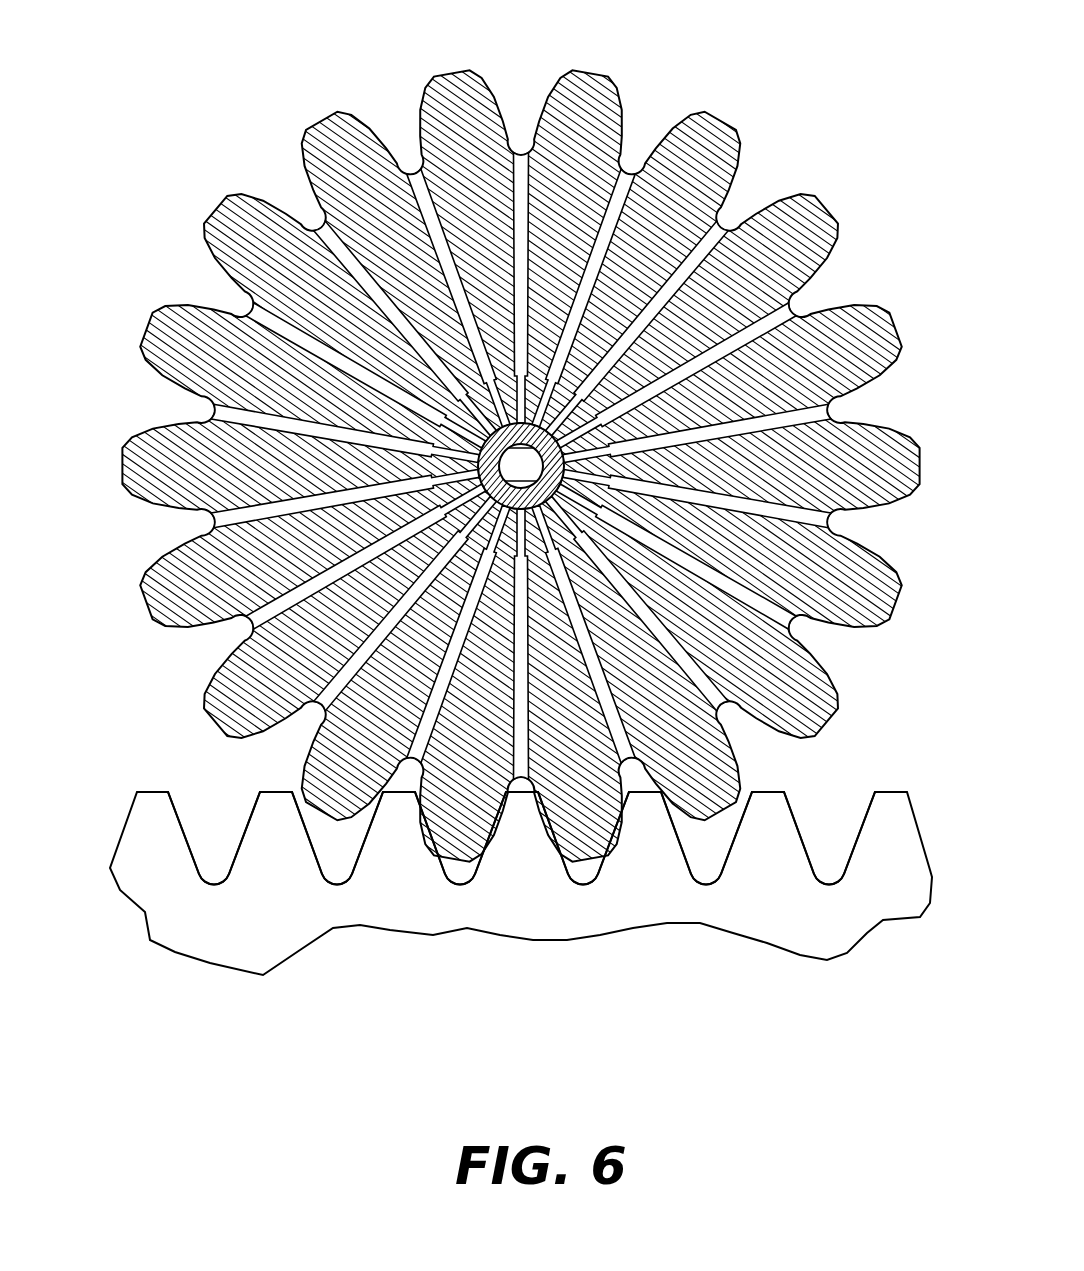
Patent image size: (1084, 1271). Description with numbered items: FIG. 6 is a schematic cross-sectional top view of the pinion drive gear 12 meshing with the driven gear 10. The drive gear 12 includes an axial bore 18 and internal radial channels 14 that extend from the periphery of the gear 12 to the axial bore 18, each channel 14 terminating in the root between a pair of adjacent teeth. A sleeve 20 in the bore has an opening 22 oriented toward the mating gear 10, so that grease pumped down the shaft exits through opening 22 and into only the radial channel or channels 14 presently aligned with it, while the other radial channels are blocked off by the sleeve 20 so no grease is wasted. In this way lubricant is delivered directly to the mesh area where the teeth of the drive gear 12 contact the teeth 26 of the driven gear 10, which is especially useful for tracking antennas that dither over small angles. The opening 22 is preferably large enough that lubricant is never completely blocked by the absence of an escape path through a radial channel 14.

The driven gear 10 is at (168, 862).
The drive gear 12 is at (501, 635).
The internal radial channels 14 is at (523, 678).
The axial bore 18 is at (521, 465).
The sleeve 20 is at (492, 462).
The opening 22 is at (493, 497).
The teeth 26 is at (520, 842).